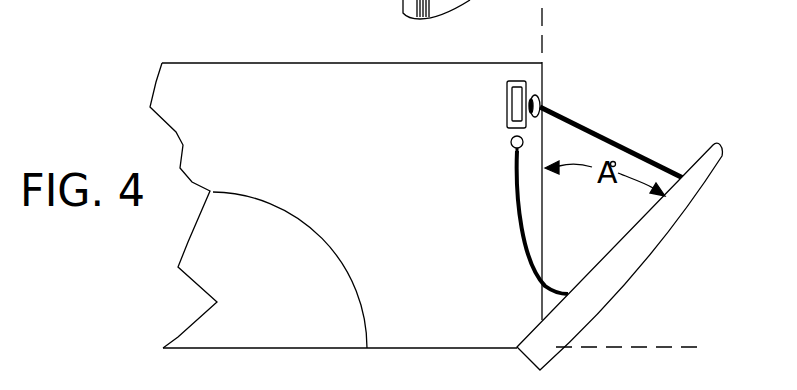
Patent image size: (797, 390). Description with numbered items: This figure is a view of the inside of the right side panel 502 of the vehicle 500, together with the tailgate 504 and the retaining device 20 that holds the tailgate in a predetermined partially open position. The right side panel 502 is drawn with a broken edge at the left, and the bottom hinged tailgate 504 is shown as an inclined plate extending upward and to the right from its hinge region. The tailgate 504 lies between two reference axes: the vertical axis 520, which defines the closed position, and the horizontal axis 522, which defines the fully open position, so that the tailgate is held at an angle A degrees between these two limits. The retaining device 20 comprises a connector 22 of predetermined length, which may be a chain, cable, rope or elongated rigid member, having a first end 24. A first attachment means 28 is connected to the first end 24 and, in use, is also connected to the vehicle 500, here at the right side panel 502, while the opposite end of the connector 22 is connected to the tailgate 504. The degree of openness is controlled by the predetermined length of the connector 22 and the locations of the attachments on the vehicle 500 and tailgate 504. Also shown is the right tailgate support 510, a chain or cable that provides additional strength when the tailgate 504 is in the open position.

The retaining device 20 is at (652, 112).
The connector 22 is at (645, 157).
The first end 24 is at (542, 105).
The first attachment means 28 is at (551, 80).
The vehicle 500 is at (177, 132).
The right side panel 502 is at (288, 63).
The tailgate 504 is at (663, 250).
The right tailgate support 510 is at (540, 268).
The vertical axis 520 is at (543, 31).
The horizontal axis 522 is at (656, 346).